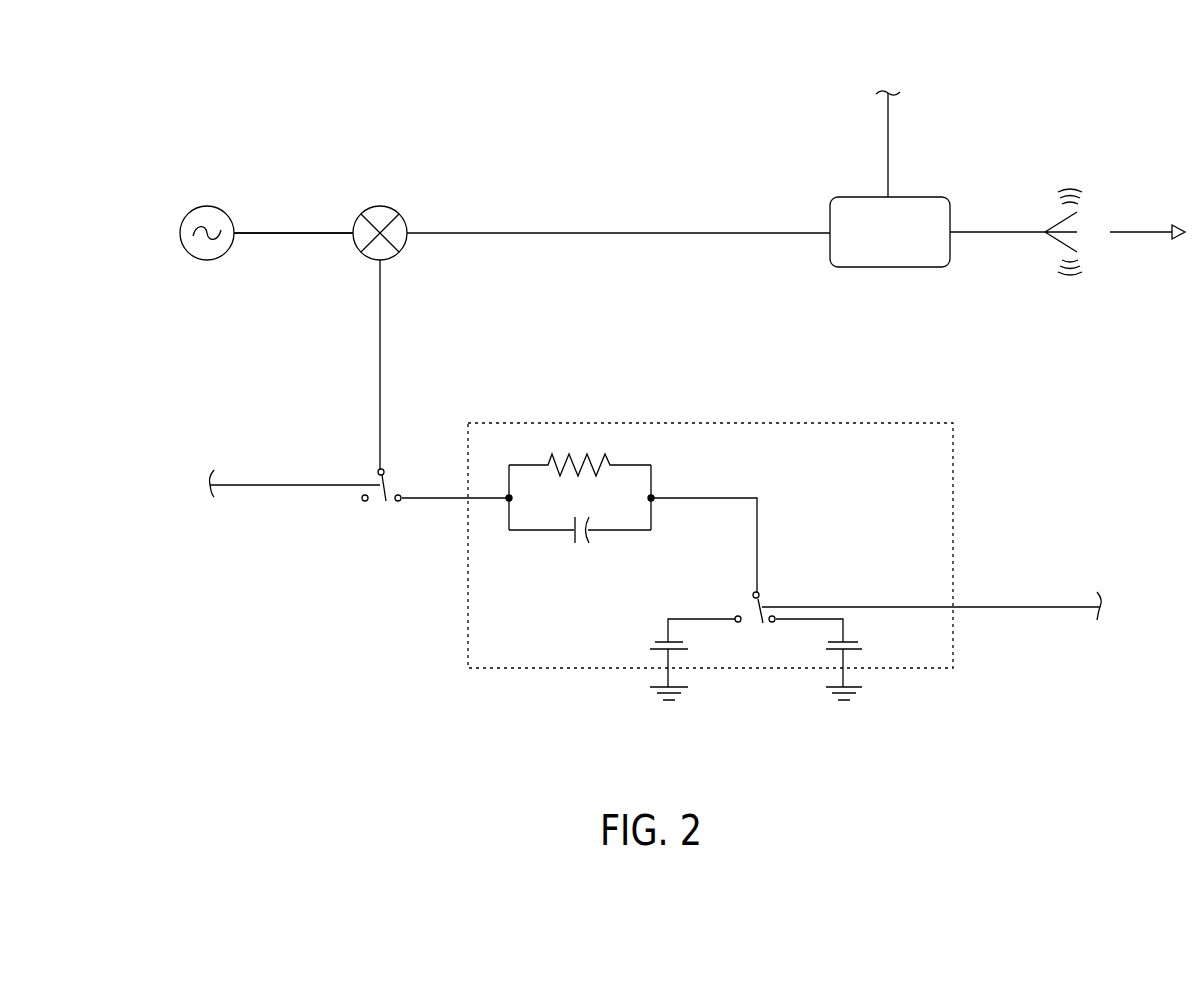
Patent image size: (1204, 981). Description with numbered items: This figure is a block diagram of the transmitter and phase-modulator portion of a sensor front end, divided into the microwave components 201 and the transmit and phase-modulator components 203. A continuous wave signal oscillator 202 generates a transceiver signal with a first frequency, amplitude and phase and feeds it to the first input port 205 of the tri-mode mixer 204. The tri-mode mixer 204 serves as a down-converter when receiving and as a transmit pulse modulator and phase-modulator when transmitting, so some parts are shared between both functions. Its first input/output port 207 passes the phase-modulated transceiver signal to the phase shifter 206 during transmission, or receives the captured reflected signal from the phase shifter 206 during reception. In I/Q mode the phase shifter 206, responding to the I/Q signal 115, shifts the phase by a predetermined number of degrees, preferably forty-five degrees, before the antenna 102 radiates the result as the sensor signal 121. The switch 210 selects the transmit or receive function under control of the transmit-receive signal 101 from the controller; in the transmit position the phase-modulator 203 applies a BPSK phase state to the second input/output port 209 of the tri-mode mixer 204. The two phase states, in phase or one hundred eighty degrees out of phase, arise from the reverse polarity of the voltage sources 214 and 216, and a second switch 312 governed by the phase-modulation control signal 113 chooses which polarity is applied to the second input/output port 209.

The transmit-receive signal 101 is at (243, 484).
The antenna 102 is at (1058, 220).
The phase-modulation control signal 113 is at (1043, 609).
The phase-modulation signals 115 is at (887, 141).
The sensor signal 121 is at (1172, 232).
The microwave components 201 is at (1046, 94).
The continuous wave signal oscillator 202 is at (195, 259).
The phase-modulator 203 is at (945, 450).
The tri-mode mixer 204 is at (392, 211).
The first input port 205 is at (356, 223).
The phase shifter 206 is at (858, 268).
The first input/output port 207 is at (408, 229).
The second input/output port 209 is at (392, 258).
The switch 210 is at (404, 479).
The voltage source 214 is at (855, 642).
The voltage source 216 is at (665, 641).
The switch 312 is at (778, 597).